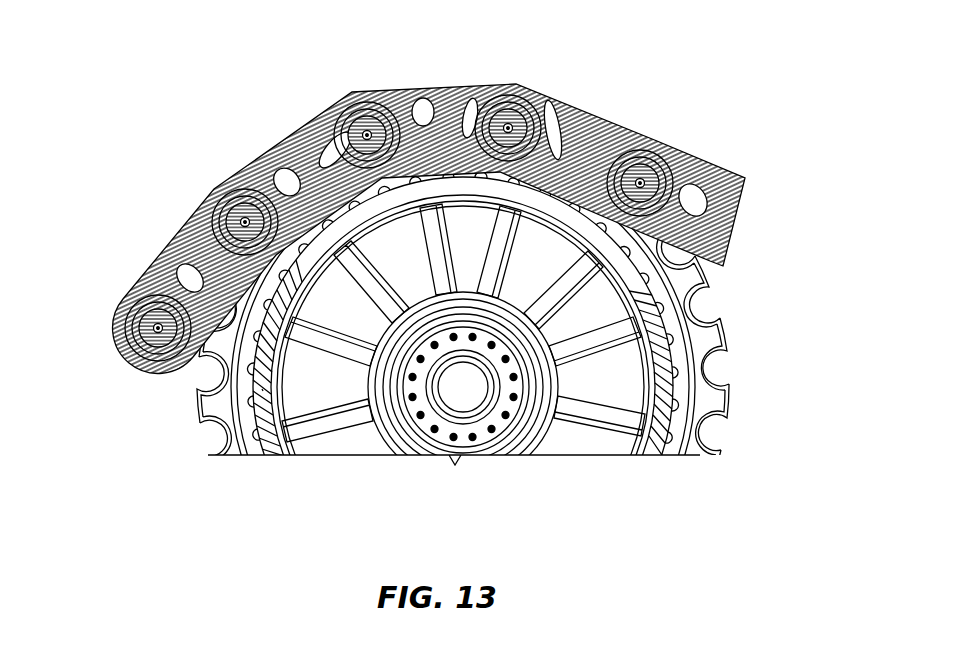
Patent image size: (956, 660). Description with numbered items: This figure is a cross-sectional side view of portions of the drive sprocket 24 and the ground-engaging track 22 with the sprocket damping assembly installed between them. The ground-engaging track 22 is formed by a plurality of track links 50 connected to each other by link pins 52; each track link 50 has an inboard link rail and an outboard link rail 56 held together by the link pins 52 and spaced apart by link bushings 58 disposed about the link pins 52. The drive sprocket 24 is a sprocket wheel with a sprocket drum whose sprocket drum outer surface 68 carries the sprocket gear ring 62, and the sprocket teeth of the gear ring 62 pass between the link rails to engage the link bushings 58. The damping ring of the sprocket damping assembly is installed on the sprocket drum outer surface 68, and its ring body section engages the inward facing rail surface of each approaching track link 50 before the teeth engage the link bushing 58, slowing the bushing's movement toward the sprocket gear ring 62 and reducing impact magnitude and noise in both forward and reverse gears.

The ground-engaging track 22 is at (442, 202).
The drive sprocket 24 is at (490, 370).
The track links 50 is at (697, 163).
The link pins 52 is at (653, 163).
The outboard link rail 56 is at (738, 186).
The link bushings 58 is at (640, 150).
The sprocket gear ring 62 is at (226, 454).
The sprocket drum outer surface 68 is at (262, 390).